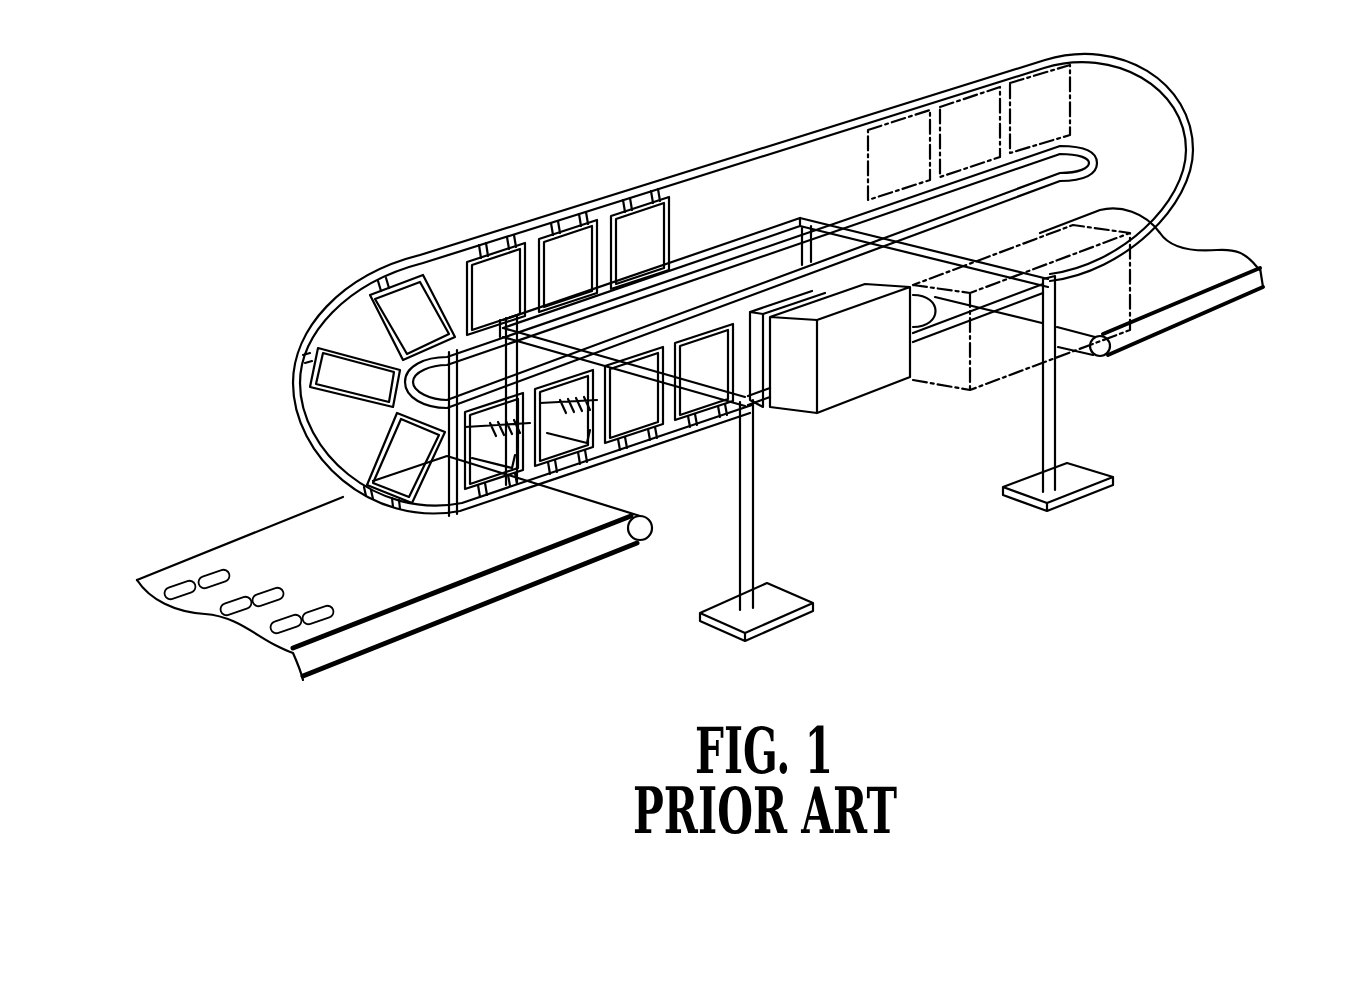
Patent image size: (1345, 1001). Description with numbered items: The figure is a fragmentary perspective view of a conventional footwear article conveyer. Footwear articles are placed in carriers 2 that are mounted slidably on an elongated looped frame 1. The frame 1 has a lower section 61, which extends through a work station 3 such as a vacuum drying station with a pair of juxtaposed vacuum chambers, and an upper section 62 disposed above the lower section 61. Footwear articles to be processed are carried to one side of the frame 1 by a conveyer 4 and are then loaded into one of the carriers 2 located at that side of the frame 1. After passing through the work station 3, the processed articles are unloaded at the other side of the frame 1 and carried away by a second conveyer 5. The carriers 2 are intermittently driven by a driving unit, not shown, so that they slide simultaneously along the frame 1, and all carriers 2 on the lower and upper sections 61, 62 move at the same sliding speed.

The elongated looped frame 1 is at (564, 180).
The carriers 2 is at (487, 440).
The work station 3 is at (856, 408).
The conveyer 4 is at (256, 525).
The second conveyer 5 is at (1226, 240).
The lower section 61 is at (941, 390).
The upper section 62 is at (724, 156).